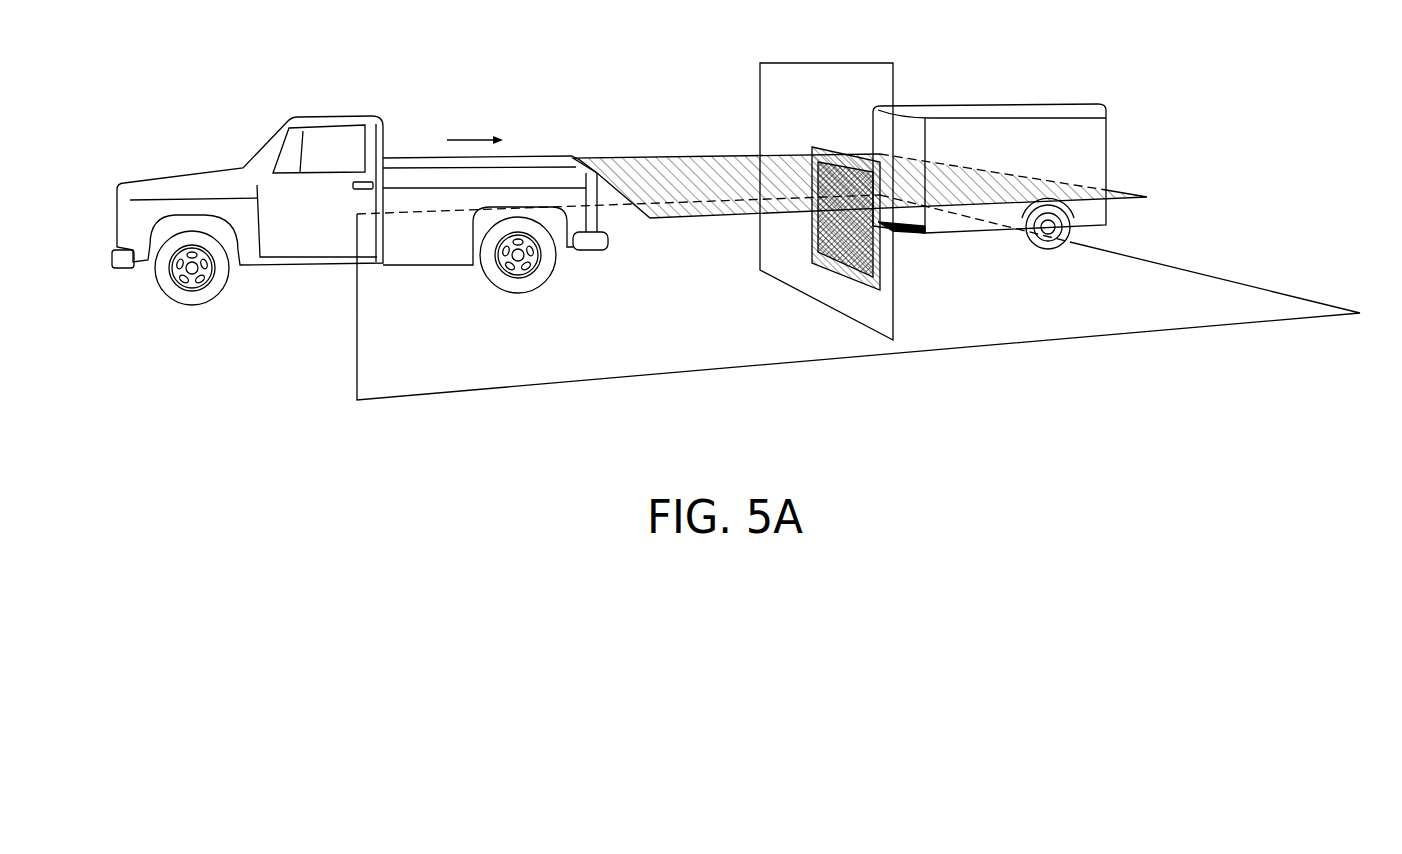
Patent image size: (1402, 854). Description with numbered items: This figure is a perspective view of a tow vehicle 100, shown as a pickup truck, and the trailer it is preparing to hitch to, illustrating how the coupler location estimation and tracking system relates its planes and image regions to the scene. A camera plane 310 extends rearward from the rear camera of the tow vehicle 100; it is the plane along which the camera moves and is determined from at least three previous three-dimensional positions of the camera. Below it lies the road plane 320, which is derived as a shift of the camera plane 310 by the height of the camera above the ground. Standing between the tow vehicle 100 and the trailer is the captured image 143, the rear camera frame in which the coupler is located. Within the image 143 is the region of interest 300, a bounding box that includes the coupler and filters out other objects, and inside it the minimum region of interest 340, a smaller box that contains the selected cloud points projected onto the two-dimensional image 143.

The tow vehicle 100 is at (340, 116).
The camera plane 310 is at (630, 158).
The road plane 320 is at (357, 386).
The image 143 is at (897, 292).
The region of interest 300 is at (853, 281).
The minimum region of interest 340 is at (812, 236).